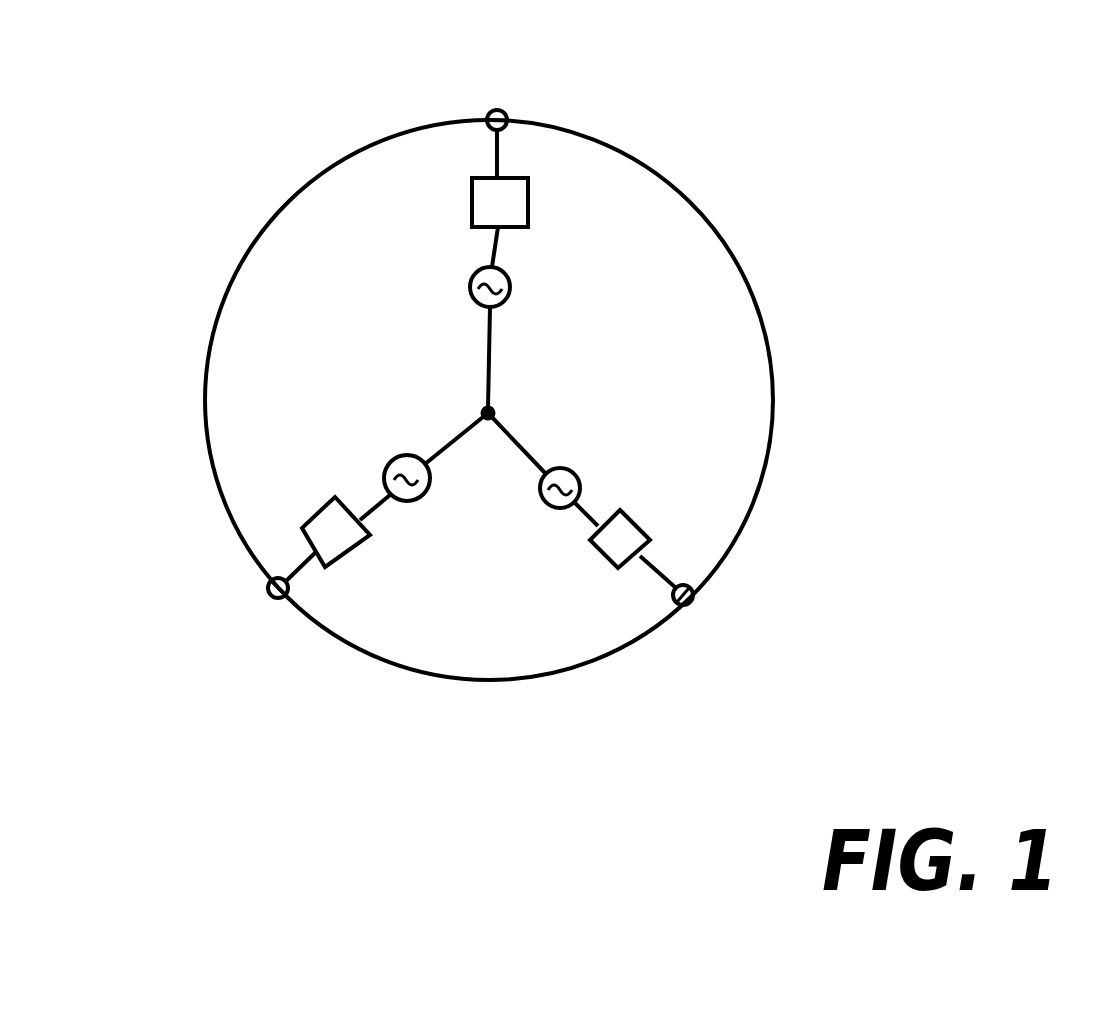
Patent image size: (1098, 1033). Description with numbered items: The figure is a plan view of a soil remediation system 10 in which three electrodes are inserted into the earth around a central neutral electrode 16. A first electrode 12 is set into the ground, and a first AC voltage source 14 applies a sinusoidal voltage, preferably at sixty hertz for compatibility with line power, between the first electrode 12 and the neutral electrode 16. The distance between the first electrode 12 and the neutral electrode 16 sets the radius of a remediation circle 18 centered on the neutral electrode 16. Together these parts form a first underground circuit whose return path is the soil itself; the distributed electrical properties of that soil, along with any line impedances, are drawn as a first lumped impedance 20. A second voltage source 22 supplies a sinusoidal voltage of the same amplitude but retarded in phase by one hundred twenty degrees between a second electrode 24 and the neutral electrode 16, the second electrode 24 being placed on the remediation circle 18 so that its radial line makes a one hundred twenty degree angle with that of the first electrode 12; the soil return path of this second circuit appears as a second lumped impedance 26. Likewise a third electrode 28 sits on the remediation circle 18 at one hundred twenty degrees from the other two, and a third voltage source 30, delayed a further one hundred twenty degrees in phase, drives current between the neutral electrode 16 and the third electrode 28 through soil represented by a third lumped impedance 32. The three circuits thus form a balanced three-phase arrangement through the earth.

The soil remediation system 10 is at (878, 328).
The first electrode 12 is at (503, 106).
The first AC voltage source 14 is at (515, 287).
The neutral electrode 16 is at (502, 406).
The remediation circle 18 is at (780, 422).
The first lumped impedance 20 is at (535, 210).
The second voltage source 22 is at (580, 470).
The second electrode 24 is at (713, 600).
The second lumped impedance 26 is at (592, 561).
The third electrode 28 is at (260, 604).
The third voltage source 30 is at (388, 454).
The third lumped impedance 32 is at (345, 565).